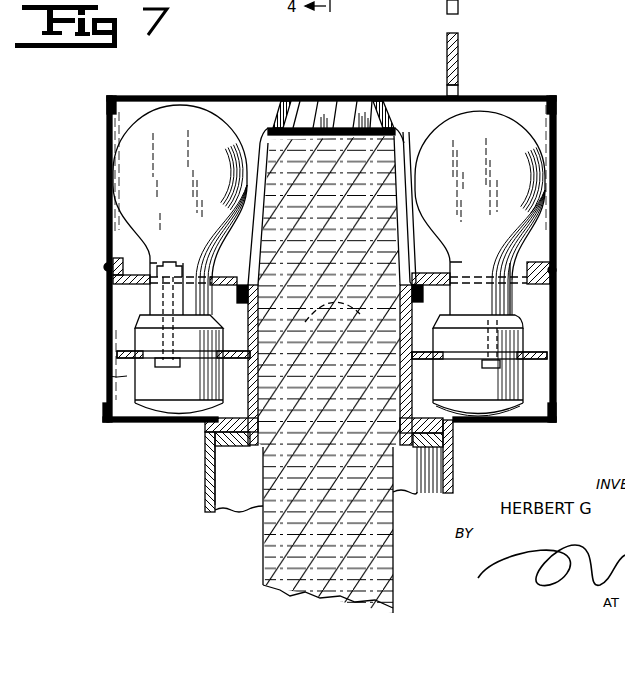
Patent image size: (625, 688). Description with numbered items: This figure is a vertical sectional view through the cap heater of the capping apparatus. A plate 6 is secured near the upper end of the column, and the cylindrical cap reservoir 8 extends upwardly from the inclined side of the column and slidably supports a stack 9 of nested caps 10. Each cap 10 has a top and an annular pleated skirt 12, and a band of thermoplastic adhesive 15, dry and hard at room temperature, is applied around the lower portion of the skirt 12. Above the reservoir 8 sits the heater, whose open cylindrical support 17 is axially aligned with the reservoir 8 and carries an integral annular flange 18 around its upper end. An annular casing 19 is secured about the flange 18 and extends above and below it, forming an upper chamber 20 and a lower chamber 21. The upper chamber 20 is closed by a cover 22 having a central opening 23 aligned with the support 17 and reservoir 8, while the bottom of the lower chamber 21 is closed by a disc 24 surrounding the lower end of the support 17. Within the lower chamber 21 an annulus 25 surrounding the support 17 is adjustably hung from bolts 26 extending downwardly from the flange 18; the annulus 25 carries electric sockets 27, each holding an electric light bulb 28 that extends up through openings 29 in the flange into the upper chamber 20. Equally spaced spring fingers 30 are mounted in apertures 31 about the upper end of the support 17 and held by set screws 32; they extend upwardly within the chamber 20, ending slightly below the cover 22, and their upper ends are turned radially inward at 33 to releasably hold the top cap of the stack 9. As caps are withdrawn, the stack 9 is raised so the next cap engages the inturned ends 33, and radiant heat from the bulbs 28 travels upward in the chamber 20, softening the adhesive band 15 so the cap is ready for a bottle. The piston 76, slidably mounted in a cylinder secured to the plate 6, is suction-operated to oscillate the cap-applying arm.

The plate 6 is at (460, 49).
The cap reservoir 8 is at (454, 477).
The stack of nested caps 9 is at (273, 543).
The cap 10 is at (343, 112).
The annular pleated skirt 12 is at (385, 101).
The band of thermoplastic adhesive 15 is at (313, 160).
The cylindrical support 17 is at (412, 400).
The annular flange 18 is at (528, 262).
The annular casing 19 is at (107, 220).
The upper chamber 20 is at (540, 133).
The lower chamber 21 is at (112, 377).
The cover 22 is at (176, 96).
The central opening 23 is at (258, 96).
The disc 24 is at (542, 422).
The annulus 25 is at (537, 352).
The bolts 26 is at (160, 338).
The electric socket 27 is at (573, 388).
The electric light bulb 28 is at (329, 210).
The openings 29 is at (143, 275).
The spring fingers 30 is at (252, 163).
The apertures 31 is at (420, 276).
The set screws 32 is at (238, 294).
The inturned ends 33 is at (266, 131).
The piston 76 is at (562, 216).